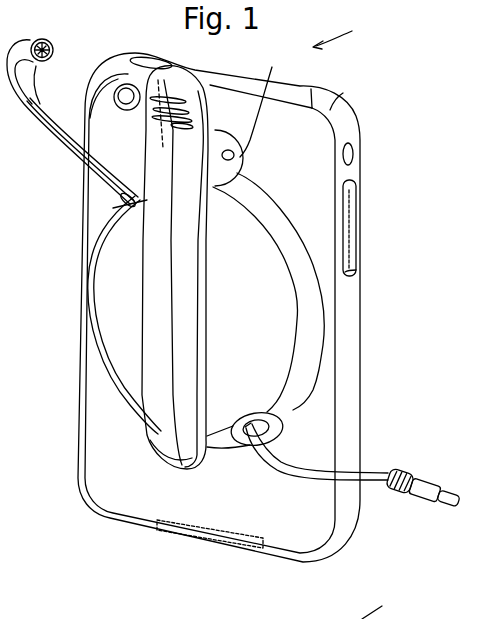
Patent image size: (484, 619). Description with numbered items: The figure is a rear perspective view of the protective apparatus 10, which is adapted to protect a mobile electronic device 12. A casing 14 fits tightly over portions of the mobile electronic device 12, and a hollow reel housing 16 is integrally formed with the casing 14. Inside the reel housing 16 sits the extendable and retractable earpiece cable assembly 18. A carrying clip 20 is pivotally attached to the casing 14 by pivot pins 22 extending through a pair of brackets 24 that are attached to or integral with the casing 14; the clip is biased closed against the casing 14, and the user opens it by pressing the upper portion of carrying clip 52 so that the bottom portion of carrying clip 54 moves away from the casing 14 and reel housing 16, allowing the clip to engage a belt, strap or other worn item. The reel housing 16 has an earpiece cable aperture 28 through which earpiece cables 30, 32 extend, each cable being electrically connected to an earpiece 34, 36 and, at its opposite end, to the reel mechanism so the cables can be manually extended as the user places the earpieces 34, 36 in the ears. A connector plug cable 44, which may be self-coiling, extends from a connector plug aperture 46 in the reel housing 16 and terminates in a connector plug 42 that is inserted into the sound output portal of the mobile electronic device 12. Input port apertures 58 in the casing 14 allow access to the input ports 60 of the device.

The protective apparatus 10 is at (398, 51).
The mobile electronic device 12 is at (280, 82).
The casing 14 is at (344, 93).
The reel housing 16 is at (304, 358).
The extendable and retractable earpiece cable assembly 18 is at (284, 333).
The carrying clip 20 is at (157, 303).
The pivot pins 22 is at (263, 104).
The brackets 24 is at (234, 152).
The earpiece cable aperture 28 is at (103, 203).
The earpiece cable 30 is at (80, 149).
The earpiece cable 32 is at (82, 157).
The earpiece 34 is at (68, 106).
The earpiece 36 is at (50, 41).
The connector plug 42 is at (420, 492).
The connector plug cable 44 is at (371, 483).
The connector plug aperture 46 is at (288, 410).
The upper portion of carrying clip 52 is at (182, 65).
The bottom portion of carrying clip 54 is at (167, 435).
The input port apertures 58 is at (84, 98).
The input ports 60 is at (122, 84).